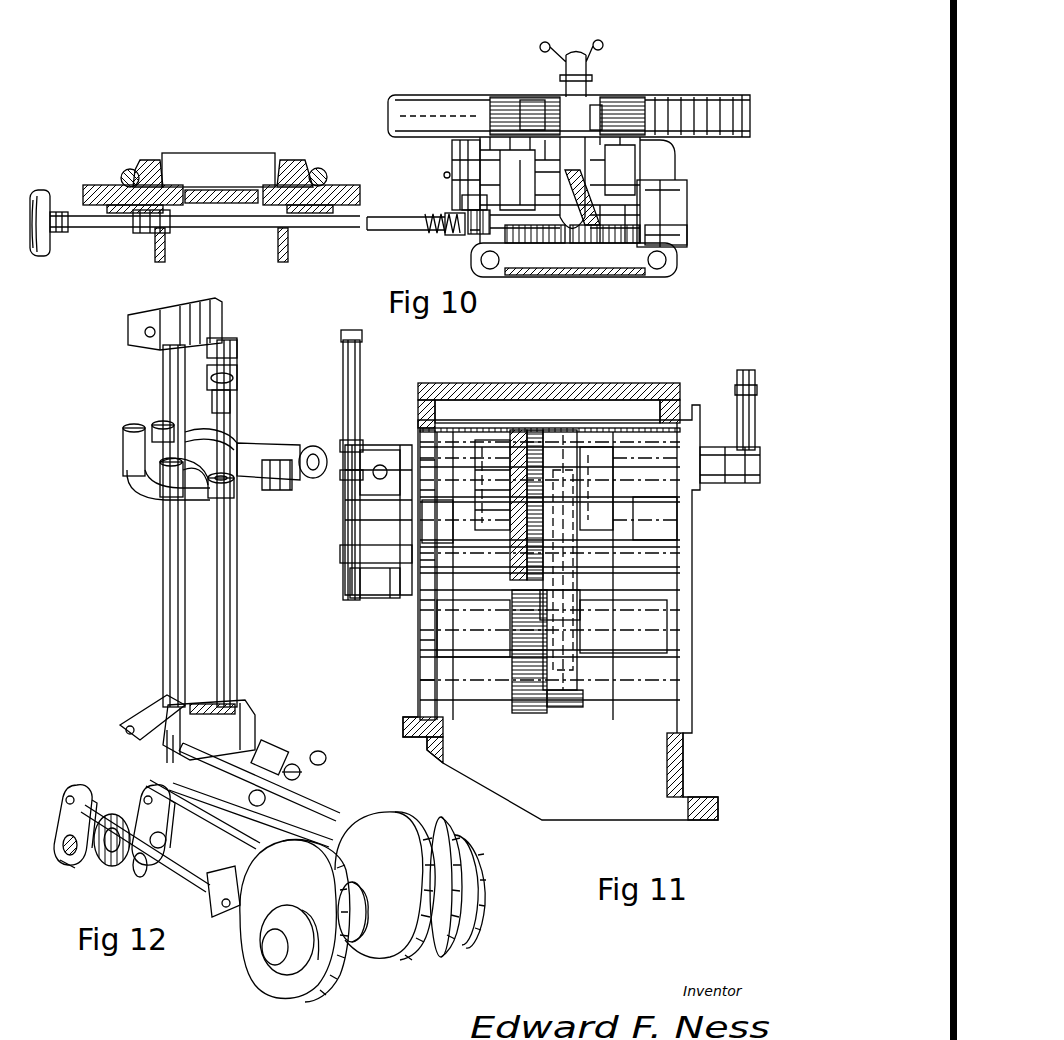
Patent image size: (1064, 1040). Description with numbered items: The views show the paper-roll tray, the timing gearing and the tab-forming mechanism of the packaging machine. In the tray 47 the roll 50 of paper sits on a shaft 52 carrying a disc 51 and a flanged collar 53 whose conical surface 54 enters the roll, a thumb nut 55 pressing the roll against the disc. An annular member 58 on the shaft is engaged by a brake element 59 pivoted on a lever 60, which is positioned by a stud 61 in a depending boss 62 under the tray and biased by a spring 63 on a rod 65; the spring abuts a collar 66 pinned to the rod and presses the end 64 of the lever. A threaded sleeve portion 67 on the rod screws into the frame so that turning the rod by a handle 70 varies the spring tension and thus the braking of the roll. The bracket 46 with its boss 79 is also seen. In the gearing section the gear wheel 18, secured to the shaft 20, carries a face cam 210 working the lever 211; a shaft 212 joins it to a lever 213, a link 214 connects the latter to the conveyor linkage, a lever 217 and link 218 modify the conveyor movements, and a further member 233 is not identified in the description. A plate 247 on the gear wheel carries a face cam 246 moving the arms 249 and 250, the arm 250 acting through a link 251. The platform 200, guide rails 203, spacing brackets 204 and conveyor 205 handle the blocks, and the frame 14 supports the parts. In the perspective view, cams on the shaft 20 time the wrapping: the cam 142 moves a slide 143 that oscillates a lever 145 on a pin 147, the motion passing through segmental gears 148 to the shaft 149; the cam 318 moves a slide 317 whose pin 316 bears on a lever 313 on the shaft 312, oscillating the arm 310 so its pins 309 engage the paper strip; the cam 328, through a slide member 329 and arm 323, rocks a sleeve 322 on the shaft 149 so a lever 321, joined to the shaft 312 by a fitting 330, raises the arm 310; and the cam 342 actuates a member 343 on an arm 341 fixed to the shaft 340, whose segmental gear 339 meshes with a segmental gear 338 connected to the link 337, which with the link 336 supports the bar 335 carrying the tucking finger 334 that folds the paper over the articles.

In FIG. 11, the frame 14 is at (603, 388).
In FIG. 11, the gear wheel 18 is at (517, 713).
In FIG. 11, the shaft 20 is at (370, 600).
In FIG. 10, the bracket 46 is at (618, 203).
In FIG. 10, the tray 47 is at (448, 113).
In FIG. 10, the roll of paper 50 is at (540, 117).
In FIG. 10, the disc 51 is at (523, 97).
In FIG. 10, the shaft 52 is at (560, 183).
In FIG. 10, the flanged collar 53 is at (605, 97).
In FIG. 10, the conical surface 54 is at (617, 102).
In FIG. 10, the thumb nut 55 is at (593, 50).
In FIG. 10, the annular member 58 is at (588, 243).
In FIG. 10, the brake element 59 is at (540, 247).
In FIG. 10, the lever 60 is at (463, 200).
In FIG. 10, the stud 61 is at (444, 175).
In FIG. 10, the depending boss 62 is at (457, 155).
In FIG. 10, the spring 63 is at (457, 236).
In FIG. 10, the end of lever 64 is at (488, 236).
In FIG. 10, the rod 65 is at (380, 230).
In FIG. 10, the collar 66 is at (430, 233).
In FIG. 10, the threaded sleeve portion 67 is at (140, 233).
In FIG. 10, the handle 70 is at (40, 202).
In FIG. 10, the boss 79 is at (677, 223).
In FIG. 12, the cam 142 is at (297, 983).
In FIG. 12, the slide 143 is at (193, 870).
In FIG. 12, the lever 145 is at (62, 820).
In FIG. 12, the pin 147 is at (60, 862).
In FIG. 12, the segmental gears 148 is at (100, 863).
In FIG. 12, the shaft 149 is at (326, 757).
In FIG. 10, the platform 200 is at (115, 193).
In FIG. 10, the guide rails 203 is at (152, 162).
In FIG. 10, the brackets 204 is at (133, 170).
In FIG. 10, the conveyor 205 is at (227, 203).
In FIG. 11, the face cam 210 is at (480, 463).
In FIG. 11, the lever 211 is at (500, 463).
In FIG. 11, the shaft 212 is at (415, 440).
In FIG. 11, the lever 213 is at (398, 455).
In FIG. 11, the link 214 is at (347, 347).
In FIG. 11, the lever 217 is at (340, 555).
In FIG. 11, the link 218 is at (343, 335).
In FIG. 11, the post 233 is at (348, 398).
In FIG. 11, the face cam 246 is at (573, 687).
In FIG. 11, the plate 247 is at (577, 622).
In FIG. 11, the arm 249 is at (587, 473).
In FIG. 11, the arm 250 is at (732, 490).
In FIG. 11, the link 251 is at (735, 385).
In FIG. 12, the pins 309 is at (232, 340).
In FIG. 12, the arm 310 is at (232, 368).
In FIG. 12, the shaft 312 is at (237, 582).
In FIG. 12, the lever 313 is at (203, 703).
In FIG. 12, the pin 316 is at (197, 748).
In FIG. 12, the slide 317 is at (312, 828).
In FIG. 12, the cam 318 is at (470, 928).
In FIG. 12, the lever 321 is at (268, 757).
In FIG. 12, the sleeve 322 is at (304, 768).
In FIG. 12, the arm 323 is at (143, 793).
In FIG. 12, the cam 328 is at (368, 947).
In FIG. 12, the slide member 329 is at (197, 870).
In FIG. 12, the fitting 330 is at (255, 752).
In FIG. 12, the tucking finger 334 is at (185, 315).
In FIG. 12, the bar 335 is at (160, 423).
In FIG. 12, the link 336 is at (143, 493).
In FIG. 12, the link 337 is at (248, 447).
In FIG. 12, the segmental gear 338 is at (290, 483).
In FIG. 12, the segmental gear 339 is at (257, 493).
In FIG. 12, the shaft 340 is at (167, 582).
In FIG. 12, the arm 341 is at (143, 723).
In FIG. 12, the cam 342 is at (436, 945).
In FIG. 12, the member 343 is at (260, 842).